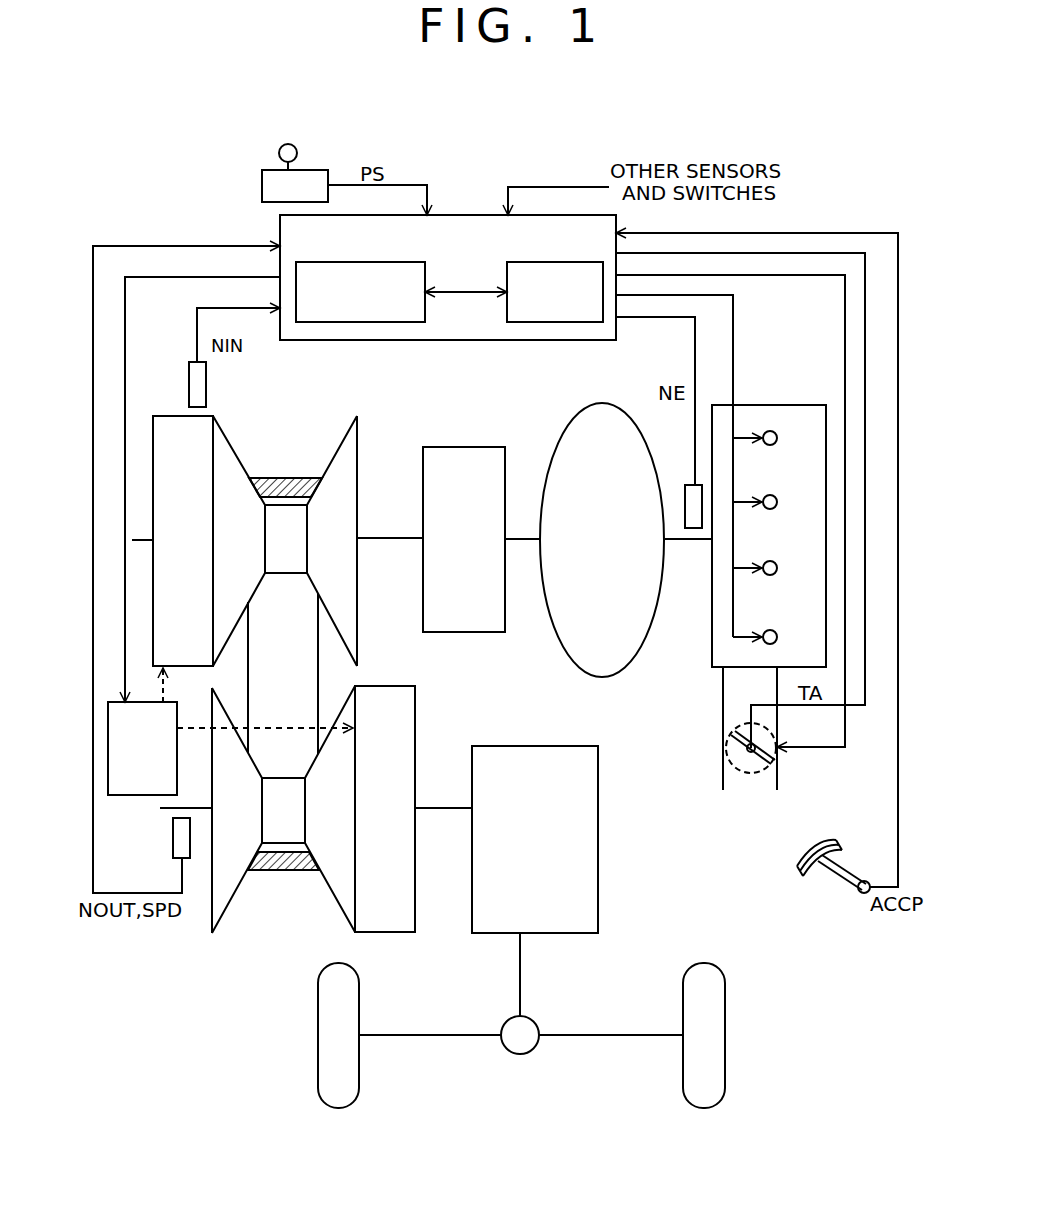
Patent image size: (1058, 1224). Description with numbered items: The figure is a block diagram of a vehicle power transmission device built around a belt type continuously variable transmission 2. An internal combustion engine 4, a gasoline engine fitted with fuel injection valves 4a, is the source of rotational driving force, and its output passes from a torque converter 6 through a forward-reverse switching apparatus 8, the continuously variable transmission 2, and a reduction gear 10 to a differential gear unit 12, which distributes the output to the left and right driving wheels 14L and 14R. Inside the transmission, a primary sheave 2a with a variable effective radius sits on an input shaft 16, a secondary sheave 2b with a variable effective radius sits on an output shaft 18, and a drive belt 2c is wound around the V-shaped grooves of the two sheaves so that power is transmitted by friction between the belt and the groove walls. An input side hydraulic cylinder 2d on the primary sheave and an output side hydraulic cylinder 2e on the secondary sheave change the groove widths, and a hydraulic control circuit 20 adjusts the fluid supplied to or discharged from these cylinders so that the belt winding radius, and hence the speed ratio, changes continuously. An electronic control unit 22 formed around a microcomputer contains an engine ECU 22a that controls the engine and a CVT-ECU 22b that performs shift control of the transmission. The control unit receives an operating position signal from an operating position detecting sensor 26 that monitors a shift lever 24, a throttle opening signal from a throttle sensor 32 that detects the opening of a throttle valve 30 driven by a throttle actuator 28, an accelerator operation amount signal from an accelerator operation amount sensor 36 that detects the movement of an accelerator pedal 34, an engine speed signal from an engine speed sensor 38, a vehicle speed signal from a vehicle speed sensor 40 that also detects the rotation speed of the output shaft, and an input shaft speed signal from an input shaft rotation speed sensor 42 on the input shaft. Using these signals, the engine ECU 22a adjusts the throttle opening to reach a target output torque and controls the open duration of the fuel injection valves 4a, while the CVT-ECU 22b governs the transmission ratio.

The belt type continuously variable transmission 2 is at (276, 687).
The primary sheave 2a is at (230, 437).
The secondary sheave 2b is at (332, 897).
The drive belt 2c is at (320, 682).
The input side hydraulic cylinder 2d is at (172, 416).
The output side hydraulic cylinder 2e is at (380, 933).
The internal combustion engine 4 is at (769, 513).
The fuel injection valves 4a is at (772, 445).
The torque converter 6 is at (602, 403).
The forward-reverse switching apparatus 8 is at (462, 447).
The reduction gear 10 is at (598, 838).
The differential gear unit 12 is at (538, 1028).
The left driving wheel 14L is at (359, 1075).
The right driving wheel 14R is at (683, 1075).
The input shaft 16 is at (378, 538).
The output shaft 18 is at (445, 808).
The hydraulic control circuit 20 is at (128, 797).
The electronic control unit 22 is at (458, 340).
The engine ECU 22a is at (527, 262).
The CVT-ECU 22b is at (312, 262).
The shift lever 24 is at (279, 152).
The operating position detecting sensor 26 is at (262, 185).
The throttle actuator 28 is at (752, 773).
The throttle valve 30 is at (732, 745).
The throttle sensor 32 is at (732, 760).
The accelerator pedal 34 is at (826, 845).
The accelerator operation amount sensor 36 is at (859, 893).
The engine speed sensor 38 is at (686, 486).
The vehicle speed sensor 40 is at (173, 845).
The input shaft rotation speed sensor 42 is at (206, 383).